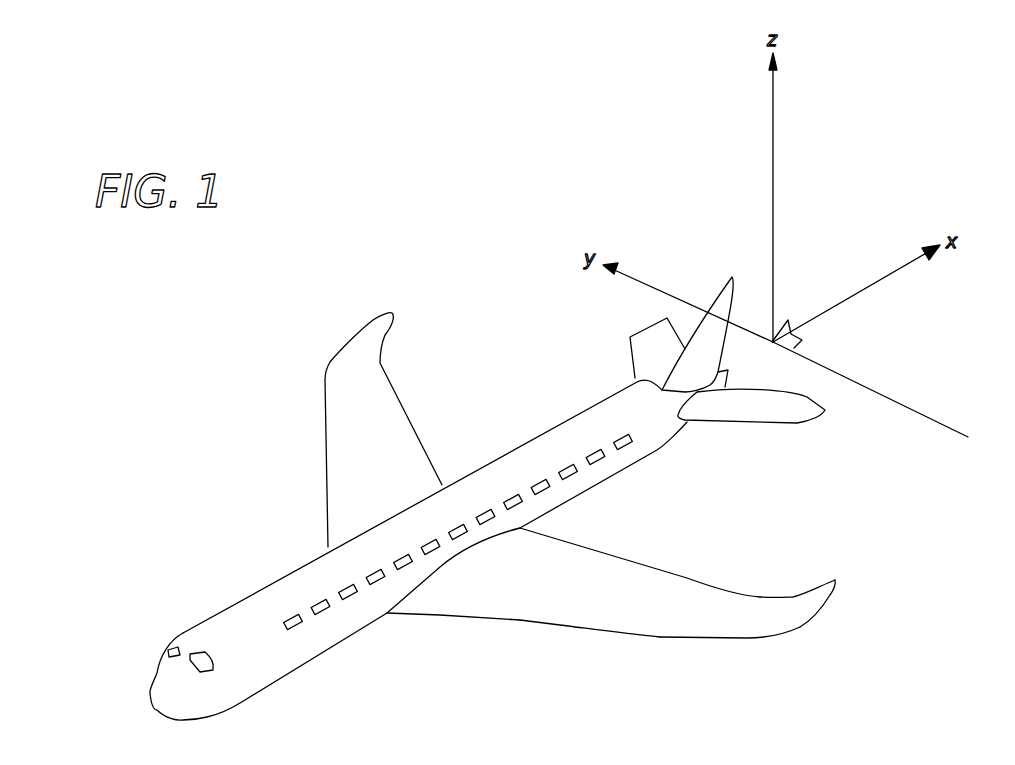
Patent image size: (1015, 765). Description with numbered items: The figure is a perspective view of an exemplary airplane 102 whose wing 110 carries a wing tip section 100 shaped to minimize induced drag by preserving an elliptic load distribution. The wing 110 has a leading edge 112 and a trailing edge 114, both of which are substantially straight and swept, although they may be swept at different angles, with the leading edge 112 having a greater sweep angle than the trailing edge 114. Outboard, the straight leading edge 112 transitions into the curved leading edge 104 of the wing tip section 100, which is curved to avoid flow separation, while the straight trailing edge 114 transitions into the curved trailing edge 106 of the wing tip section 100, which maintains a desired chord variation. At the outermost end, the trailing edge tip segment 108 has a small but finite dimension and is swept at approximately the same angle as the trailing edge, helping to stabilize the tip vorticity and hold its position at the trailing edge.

The wing tip section 100 is at (395, 303).
The airplane 102 is at (215, 540).
The leading edge 104 is at (800, 627).
The trailing edge 106 is at (787, 597).
The trailing edge tip segment 108 is at (850, 597).
The wing 110 is at (435, 645).
The leading edge 112 is at (580, 627).
The trailing edge 114 is at (613, 558).